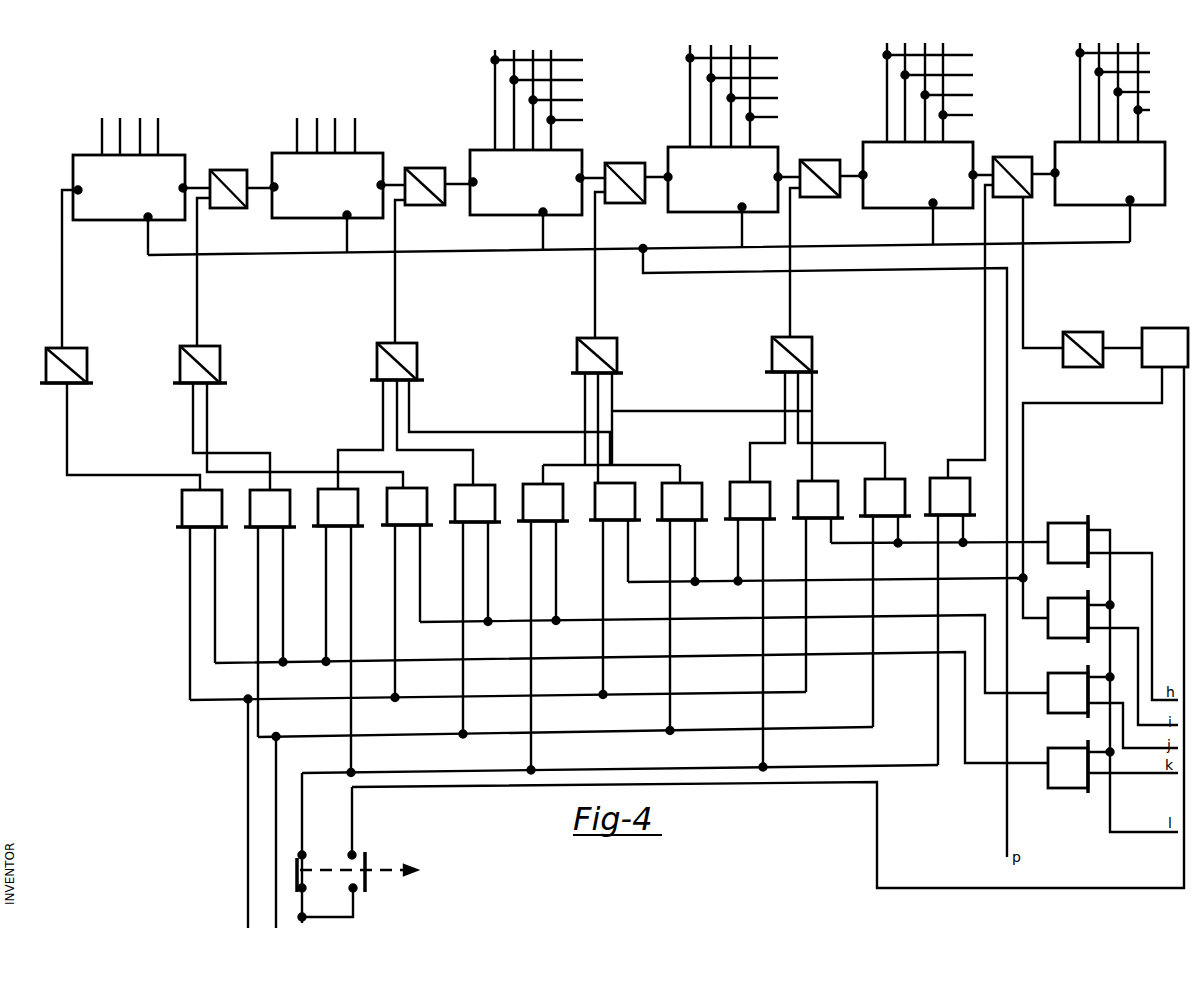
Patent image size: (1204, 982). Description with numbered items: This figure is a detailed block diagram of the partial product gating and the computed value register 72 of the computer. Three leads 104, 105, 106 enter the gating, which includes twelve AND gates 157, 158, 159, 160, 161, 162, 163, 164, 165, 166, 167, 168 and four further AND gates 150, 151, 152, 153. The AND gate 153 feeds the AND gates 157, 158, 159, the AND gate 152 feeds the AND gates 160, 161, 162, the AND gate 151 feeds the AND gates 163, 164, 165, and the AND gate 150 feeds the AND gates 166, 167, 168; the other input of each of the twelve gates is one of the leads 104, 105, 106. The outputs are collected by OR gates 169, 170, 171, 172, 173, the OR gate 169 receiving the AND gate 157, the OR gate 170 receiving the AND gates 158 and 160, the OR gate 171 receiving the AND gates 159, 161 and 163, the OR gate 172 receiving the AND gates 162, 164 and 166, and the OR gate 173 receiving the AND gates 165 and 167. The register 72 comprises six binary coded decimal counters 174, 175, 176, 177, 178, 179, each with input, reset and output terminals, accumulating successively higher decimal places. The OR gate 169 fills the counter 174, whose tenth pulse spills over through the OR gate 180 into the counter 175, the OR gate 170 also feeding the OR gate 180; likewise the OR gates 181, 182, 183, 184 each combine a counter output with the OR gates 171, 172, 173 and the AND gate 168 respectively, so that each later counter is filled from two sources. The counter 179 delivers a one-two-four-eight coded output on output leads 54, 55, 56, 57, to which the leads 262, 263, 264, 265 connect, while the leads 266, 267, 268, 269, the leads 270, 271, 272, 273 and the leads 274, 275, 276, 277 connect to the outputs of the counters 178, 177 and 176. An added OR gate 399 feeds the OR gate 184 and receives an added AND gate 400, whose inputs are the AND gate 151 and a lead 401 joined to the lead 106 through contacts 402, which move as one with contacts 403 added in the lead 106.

The binary coded decimal counter 174 is at (106, 222).
The binary coded decimal counter 175 is at (305, 220).
The binary coded decimal counter 176 is at (502, 217).
The binary coded decimal counter 177 is at (696, 214).
The binary coded decimal counter 178 is at (890, 210).
The binary coded decimal counter 179 is at (1087, 207).
The OR gate 180 is at (230, 168).
The OR gate 181 is at (425, 166).
The OR gate 182 is at (625, 161).
The OR gate 183 is at (824, 158).
The OR gate 184 is at (1012, 198).
The OR gate 169 is at (76, 348).
The OR gate 170 is at (209, 346).
The OR gate 171 is at (406, 343).
The OR gate 172 is at (608, 338).
The OR gate 173 is at (803, 337).
The AND gate 157 is at (182, 510).
The AND gate 158 is at (252, 527).
The AND gate 159 is at (320, 526).
The AND gate 160 is at (389, 525).
The AND gate 161 is at (467, 484).
The AND gate 162 is at (535, 483).
The AND gate 163 is at (597, 521).
The AND gate 164 is at (693, 483).
The AND gate 165 is at (763, 482).
The AND gate 166 is at (831, 481).
The AND gate 167 is at (898, 479).
The AND gate 168 is at (962, 478).
The AND gate 150 is at (1052, 523).
The AND gate 151 is at (1069, 598).
The AND gate 152 is at (1064, 673).
The AND gate 153 is at (1064, 748).
The OR gate 399 is at (1084, 367).
The AND gate 400 is at (1176, 328).
The lead 401 is at (489, 787).
The contacts 402 is at (366, 880).
The contacts 403 is at (297, 855).
The lead 104 is at (248, 779).
The lead 105 is at (277, 771).
The lead 106 is at (302, 794).
The register 72 is at (1045, 265).
The output lead 54 is at (1080, 118).
The output lead 55 is at (1117, 117).
The output lead 56 is at (1117, 126).
The output lead 57 is at (1138, 128).
The lead 262 is at (1155, 47).
The lead 263 is at (1155, 66).
The lead 264 is at (1155, 86).
The lead 265 is at (1155, 104).
The lead 266 is at (972, 56).
The lead 267 is at (972, 76).
The lead 268 is at (972, 96).
The lead 269 is at (972, 116).
The lead 270 is at (783, 52).
The lead 271 is at (783, 72).
The lead 272 is at (783, 92).
The lead 273 is at (783, 111).
The lead 274 is at (588, 54).
The lead 275 is at (588, 74).
The lead 276 is at (588, 94).
The lead 277 is at (588, 114).